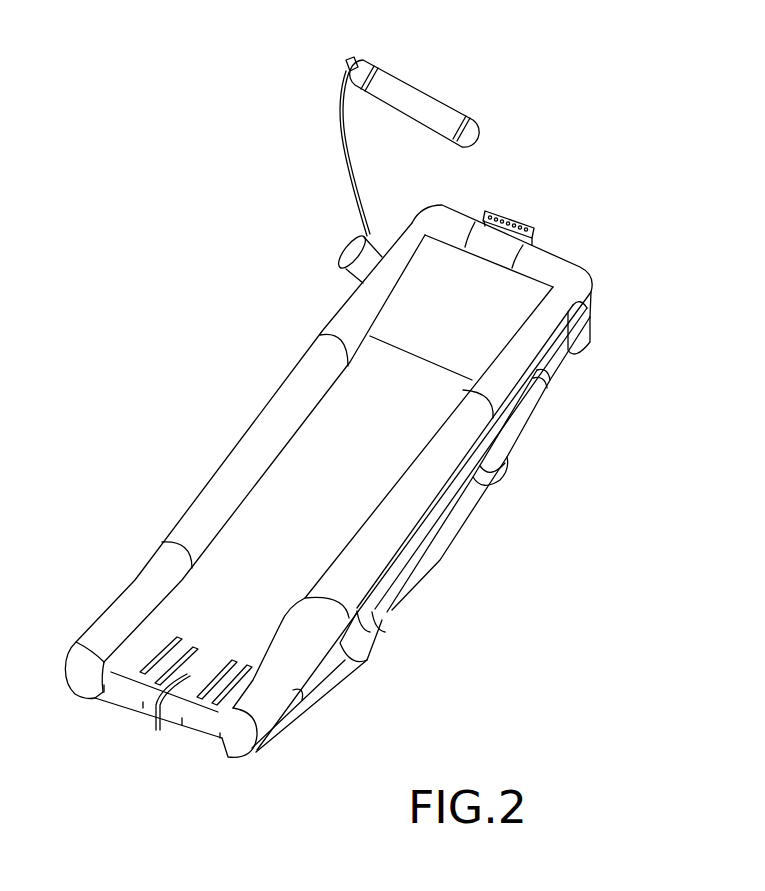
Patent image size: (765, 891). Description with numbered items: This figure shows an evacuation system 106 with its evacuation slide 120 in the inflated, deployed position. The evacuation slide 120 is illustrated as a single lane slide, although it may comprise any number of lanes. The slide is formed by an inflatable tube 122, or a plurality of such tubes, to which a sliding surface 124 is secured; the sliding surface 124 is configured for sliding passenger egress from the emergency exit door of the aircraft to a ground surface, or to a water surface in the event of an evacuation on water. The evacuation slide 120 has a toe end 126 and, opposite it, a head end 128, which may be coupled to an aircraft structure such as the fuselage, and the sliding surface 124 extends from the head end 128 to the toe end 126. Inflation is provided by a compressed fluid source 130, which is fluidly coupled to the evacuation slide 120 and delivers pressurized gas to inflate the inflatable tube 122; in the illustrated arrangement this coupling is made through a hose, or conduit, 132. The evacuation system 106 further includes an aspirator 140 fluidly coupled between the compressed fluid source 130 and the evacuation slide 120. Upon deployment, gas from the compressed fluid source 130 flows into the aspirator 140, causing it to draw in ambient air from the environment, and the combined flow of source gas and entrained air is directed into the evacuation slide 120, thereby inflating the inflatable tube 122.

The evacuation system 106 is at (606, 93).
The evacuation slide 120 is at (566, 237).
The inflatable tube 122 is at (268, 436).
The sliding surface 124 is at (343, 479).
The toe end 126 is at (122, 708).
The head end 128 is at (467, 215).
The compressed fluid source 130 is at (428, 103).
The hose 132 is at (360, 182).
The aspirator 140 is at (352, 270).